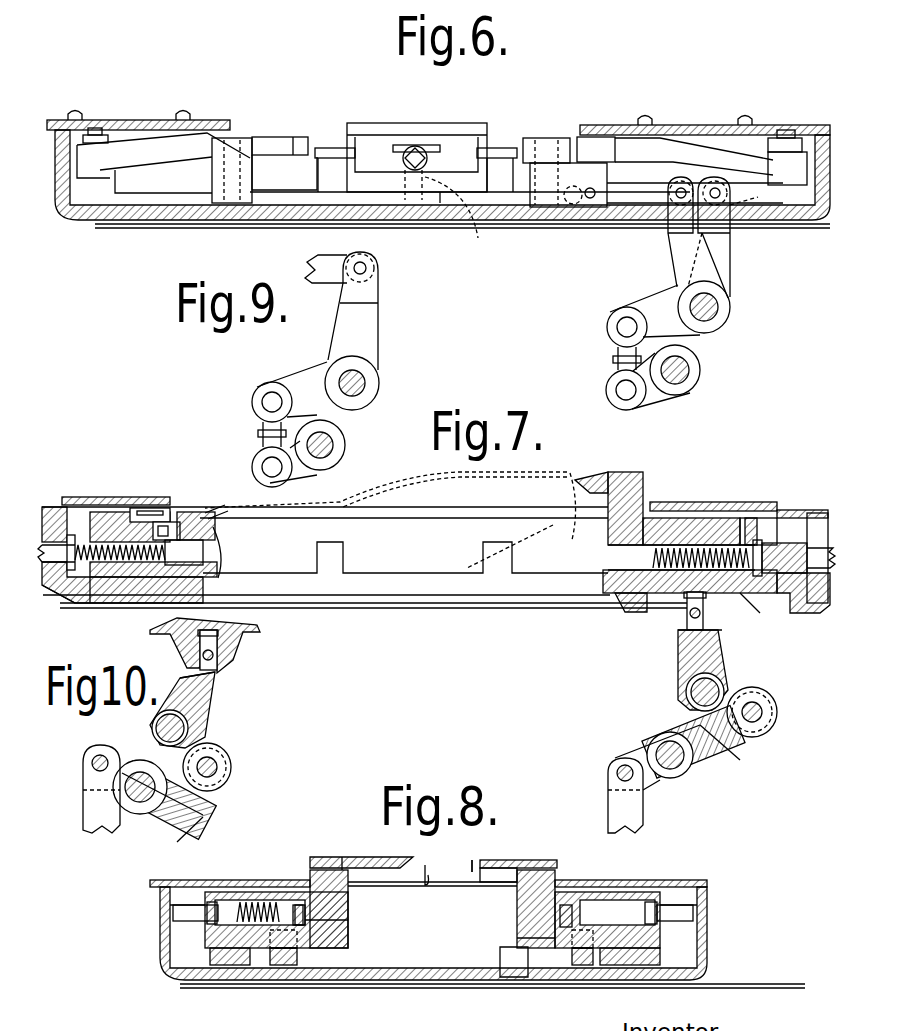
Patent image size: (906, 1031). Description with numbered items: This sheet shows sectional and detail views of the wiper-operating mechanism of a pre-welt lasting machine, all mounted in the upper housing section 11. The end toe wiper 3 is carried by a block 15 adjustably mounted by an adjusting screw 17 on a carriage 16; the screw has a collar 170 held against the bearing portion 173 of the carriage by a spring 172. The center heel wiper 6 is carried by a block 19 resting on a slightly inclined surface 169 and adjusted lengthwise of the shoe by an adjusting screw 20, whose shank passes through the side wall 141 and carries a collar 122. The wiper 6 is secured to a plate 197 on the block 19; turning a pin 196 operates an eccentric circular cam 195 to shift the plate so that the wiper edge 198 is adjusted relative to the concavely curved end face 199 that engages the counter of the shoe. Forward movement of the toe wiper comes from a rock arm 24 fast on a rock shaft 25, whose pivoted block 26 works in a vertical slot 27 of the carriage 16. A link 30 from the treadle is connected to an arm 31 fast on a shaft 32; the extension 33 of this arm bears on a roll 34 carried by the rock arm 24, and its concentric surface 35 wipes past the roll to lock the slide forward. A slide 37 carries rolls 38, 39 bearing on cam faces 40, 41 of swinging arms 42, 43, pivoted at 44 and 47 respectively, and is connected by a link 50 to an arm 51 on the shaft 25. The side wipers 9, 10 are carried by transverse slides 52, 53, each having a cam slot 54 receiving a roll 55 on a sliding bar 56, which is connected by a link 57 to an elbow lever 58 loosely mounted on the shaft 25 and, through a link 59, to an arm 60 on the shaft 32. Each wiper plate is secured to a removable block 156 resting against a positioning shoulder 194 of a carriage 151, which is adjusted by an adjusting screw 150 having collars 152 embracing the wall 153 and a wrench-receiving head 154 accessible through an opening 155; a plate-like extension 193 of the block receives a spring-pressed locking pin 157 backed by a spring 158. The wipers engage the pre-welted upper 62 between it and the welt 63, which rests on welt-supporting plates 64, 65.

In FIG. 7, the end toe wiper 3 is at (587, 473).
In FIG. 7, the center heel wiper 6 is at (213, 508).
In FIG. 8, the side wiper 9 is at (497, 862).
In FIG. 8, the side wiper 10 is at (380, 857).
In FIG. 6, the upper housing section 11 is at (55, 222).
In FIG. 7, the upper housing section 11 is at (75, 595).
In FIG. 8, the upper housing section 11 is at (707, 953).
In FIG. 7, the block 15 is at (667, 525).
In FIG. 7, the carriage 16 is at (742, 590).
In FIG. 10, the carriage 16 is at (255, 628).
In FIG. 7, the adjusting screw 17 is at (683, 550).
In FIG. 7, the block 19 is at (125, 573).
In FIG. 7, the adjusting screw 20 is at (83, 543).
In FIG. 7, the rock arm 24 is at (682, 659).
In FIG. 10, the rock arm 24 is at (230, 702).
In FIG. 6, the rock shaft 25 is at (720, 307).
In FIG. 9, the rock shaft 25 is at (352, 375).
In FIG. 7, the rock shaft 25 is at (690, 692).
In FIG. 10, the rock shaft 25 is at (185, 732).
In FIG. 7, the pivotally mounted block 26 is at (678, 632).
In FIG. 10, the pivotally mounted block 26 is at (230, 677).
In FIG. 7, the vertical slot 27 is at (687, 597).
In FIG. 10, the vertical slot 27 is at (222, 640).
In FIG. 7, the link 30 is at (643, 808).
In FIG. 10, the link 30 is at (88, 790).
In FIG. 7, the arm 31 is at (643, 747).
In FIG. 10, the arm 31 is at (125, 763).
In FIG. 6, the shaft 32 is at (683, 370).
In FIG. 9, the shaft 32 is at (323, 437).
In FIG. 7, the shaft 32 is at (680, 777).
In FIG. 10, the shaft 32 is at (140, 803).
In FIG. 7, the extension 33 is at (730, 763).
In FIG. 10, the extension 33 is at (187, 832).
In FIG. 7, the roll 34 is at (752, 692).
In FIG. 10, the roll 34 is at (230, 765).
In FIG. 7, the concentric surface 35 is at (737, 742).
In FIG. 10, the concentric surface 35 is at (205, 812).
In FIG. 6, the slide 37 is at (448, 203).
In FIG. 6, the roll 38 is at (537, 143).
In FIG. 6, the roll 39 is at (247, 142).
In FIG. 6, the cam face 40 is at (590, 145).
In FIG. 6, the cam face 41 is at (278, 143).
In FIG. 6, the swinging arm 42 is at (630, 143).
In FIG. 6, the swinging arm 43 is at (190, 142).
In FIG. 6, the pivot 44 is at (790, 140).
In FIG. 6, the pivot 47 is at (102, 138).
In FIG. 6, the link 50 is at (627, 180).
In FIG. 6, the arm 51 is at (673, 243).
In FIG. 6, the slide 52 is at (367, 173).
In FIG. 8, the slide 52 is at (515, 938).
In FIG. 8, the slide 53 is at (350, 948).
In FIG. 8, the cam slot 54 is at (297, 943).
In FIG. 6, the roll 55 is at (470, 221).
In FIG. 8, the roll 55 is at (263, 947).
In FIG. 8, the sliding bar 56 is at (293, 962).
In FIG. 6, the link 57 is at (760, 199).
In FIG. 9, the link 57 is at (305, 264).
In FIG. 6, the elbow lever 58 is at (723, 250).
In FIG. 9, the elbow lever 58 is at (365, 323).
In FIG. 6, the link 59 is at (618, 355).
In FIG. 9, the link 59 is at (262, 433).
In FIG. 6, the arm 60 is at (657, 400).
In FIG. 9, the arm 60 is at (305, 470).
In FIG. 7, the pre-welted upper 62 is at (521, 546).
In FIG. 7, the welt 63 is at (567, 470).
In FIG. 8, the welt-supporting plate 64 is at (472, 863).
In FIG. 8, the welt-supporting plate 65 is at (422, 882).
In FIG. 7, the collar 122 is at (68, 537).
In FIG. 7, the side wall 141 is at (48, 597).
In FIG. 8, the adjusting screw 150 is at (233, 925).
In FIG. 8, the carriage 151 is at (350, 920).
In FIG. 6, the collar 152 is at (410, 153).
In FIG. 8, the collar 152 is at (205, 905).
In FIG. 8, the wall 153 is at (205, 925).
In FIG. 6, the wrench-receiving head 154 is at (418, 158).
In FIG. 8, the wrench-receiving head 154 is at (175, 912).
In FIG. 8, the opening 155 is at (158, 905).
In FIG. 8, the block 156 is at (318, 870).
In FIG. 8, the locking pin 157 is at (298, 905).
In FIG. 8, the spring 158 is at (303, 907).
In FIG. 7, the inclined surface 169 is at (140, 578).
In FIG. 7, the collar 170 is at (767, 543).
In FIG. 7, the spring 172 is at (810, 543).
In FIG. 7, the bearing portion 173 is at (763, 547).
In FIG. 8, the plate-like extension 193 is at (258, 900).
In FIG. 8, the positioning shoulder 194 is at (345, 870).
In FIG. 7, the circular cam 195 is at (167, 538).
In FIG. 7, the pin 196 is at (172, 518).
In FIG. 7, the plate 197 is at (135, 516).
In FIG. 7, the edge 198 is at (230, 513).
In FIG. 7, the concavely curved end face 199 is at (223, 530).